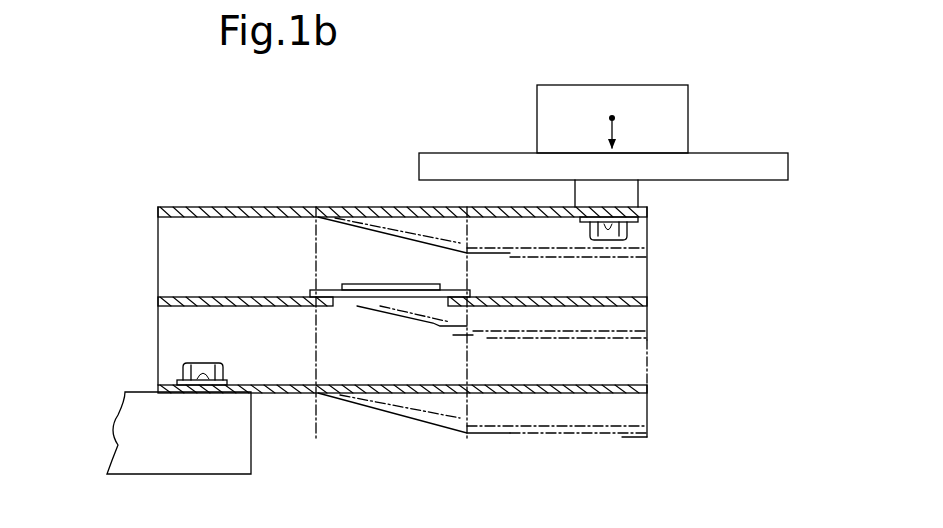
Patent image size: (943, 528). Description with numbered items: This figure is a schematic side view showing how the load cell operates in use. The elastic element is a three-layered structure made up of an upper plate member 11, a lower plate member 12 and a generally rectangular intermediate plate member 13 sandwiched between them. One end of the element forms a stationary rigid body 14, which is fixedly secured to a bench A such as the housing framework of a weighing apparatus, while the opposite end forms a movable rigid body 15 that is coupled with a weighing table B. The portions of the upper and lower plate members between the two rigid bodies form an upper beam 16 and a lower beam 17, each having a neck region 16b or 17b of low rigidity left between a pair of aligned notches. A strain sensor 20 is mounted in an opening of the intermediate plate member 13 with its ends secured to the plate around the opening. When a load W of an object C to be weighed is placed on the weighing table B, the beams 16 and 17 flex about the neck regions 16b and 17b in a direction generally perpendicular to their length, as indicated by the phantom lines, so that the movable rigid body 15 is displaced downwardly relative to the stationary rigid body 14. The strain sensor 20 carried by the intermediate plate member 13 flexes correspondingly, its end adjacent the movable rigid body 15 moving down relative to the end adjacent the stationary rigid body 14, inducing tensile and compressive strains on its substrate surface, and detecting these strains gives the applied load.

The upper beam 16 is at (390, 207).
The neck region 16b is at (317, 207).
The intermediate plate member 13 is at (632, 296).
The strain sensor 20 is at (340, 288).
The lower plate member 12 is at (630, 385).
The movable rigid body 15 is at (630, 395).
The lower beam 17 is at (407, 395).
The neck region 17b is at (316, 440).
The upper plate member 11 is at (647, 213).
The stationary rigid body 14 is at (177, 382).
The bench A is at (198, 463).
The weighing table B is at (740, 162).
The object to be weighed C is at (688, 110).
The load W is at (615, 117).